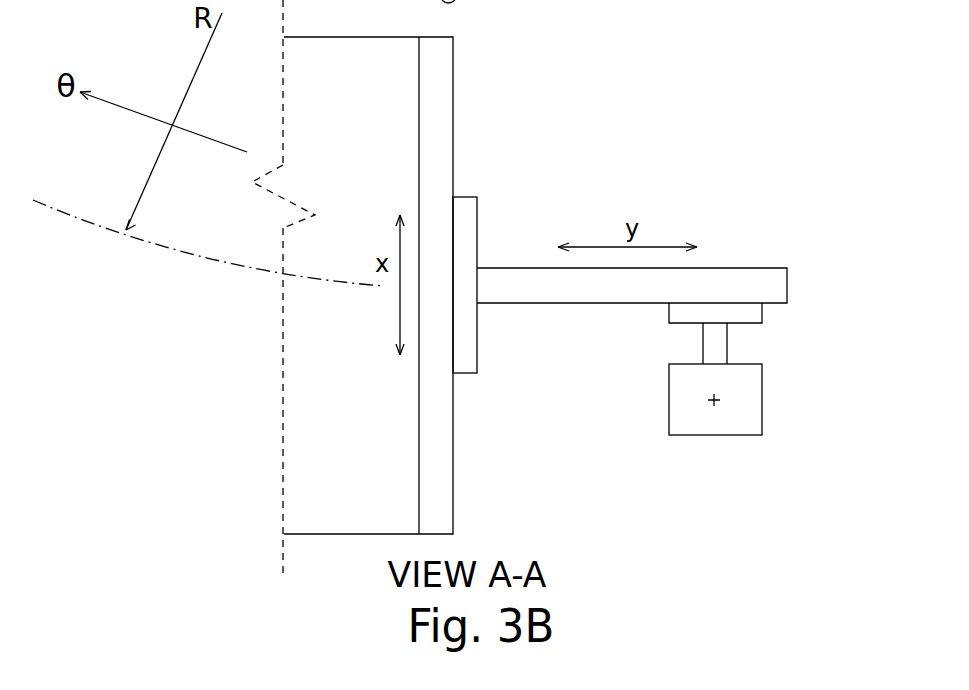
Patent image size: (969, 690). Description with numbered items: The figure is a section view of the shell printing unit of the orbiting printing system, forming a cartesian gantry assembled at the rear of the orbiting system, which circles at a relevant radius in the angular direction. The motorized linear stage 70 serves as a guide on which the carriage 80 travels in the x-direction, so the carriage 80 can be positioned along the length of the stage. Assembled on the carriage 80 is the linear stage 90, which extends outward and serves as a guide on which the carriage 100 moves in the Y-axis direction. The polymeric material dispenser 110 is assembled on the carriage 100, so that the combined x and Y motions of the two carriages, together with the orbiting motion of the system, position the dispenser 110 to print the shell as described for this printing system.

The motorized linear stage 70 is at (445, 52).
The carriage 80 is at (462, 197).
The linear stage 90 is at (773, 268).
The carriage 100 is at (787, 286).
The polymeric material dispenser 110 is at (752, 397).